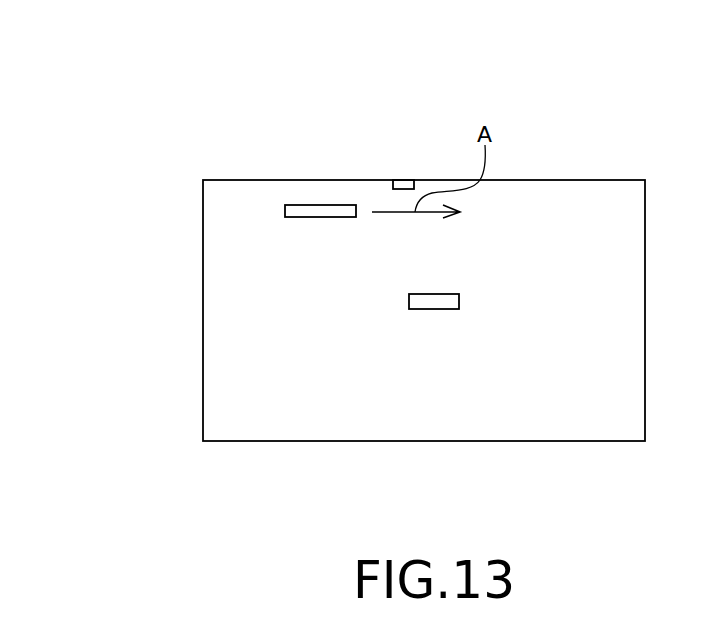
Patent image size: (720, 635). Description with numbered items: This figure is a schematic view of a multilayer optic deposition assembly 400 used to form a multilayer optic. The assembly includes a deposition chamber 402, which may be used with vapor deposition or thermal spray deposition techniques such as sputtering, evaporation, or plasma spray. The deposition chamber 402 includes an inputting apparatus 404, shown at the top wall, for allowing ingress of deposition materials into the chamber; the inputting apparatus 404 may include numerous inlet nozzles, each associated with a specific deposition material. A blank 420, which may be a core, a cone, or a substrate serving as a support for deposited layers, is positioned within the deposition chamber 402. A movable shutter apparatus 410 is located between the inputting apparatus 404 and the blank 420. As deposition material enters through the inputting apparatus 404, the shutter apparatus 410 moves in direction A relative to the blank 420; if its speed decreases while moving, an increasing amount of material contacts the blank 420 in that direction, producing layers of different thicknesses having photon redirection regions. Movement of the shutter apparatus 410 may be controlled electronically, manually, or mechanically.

The multilayer optic deposition assembly 400 is at (80, 72).
The deposition chamber 402 is at (610, 197).
The inputting apparatus 404 is at (402, 180).
The shutter apparatus 410 is at (318, 205).
The blank 420 is at (436, 301).